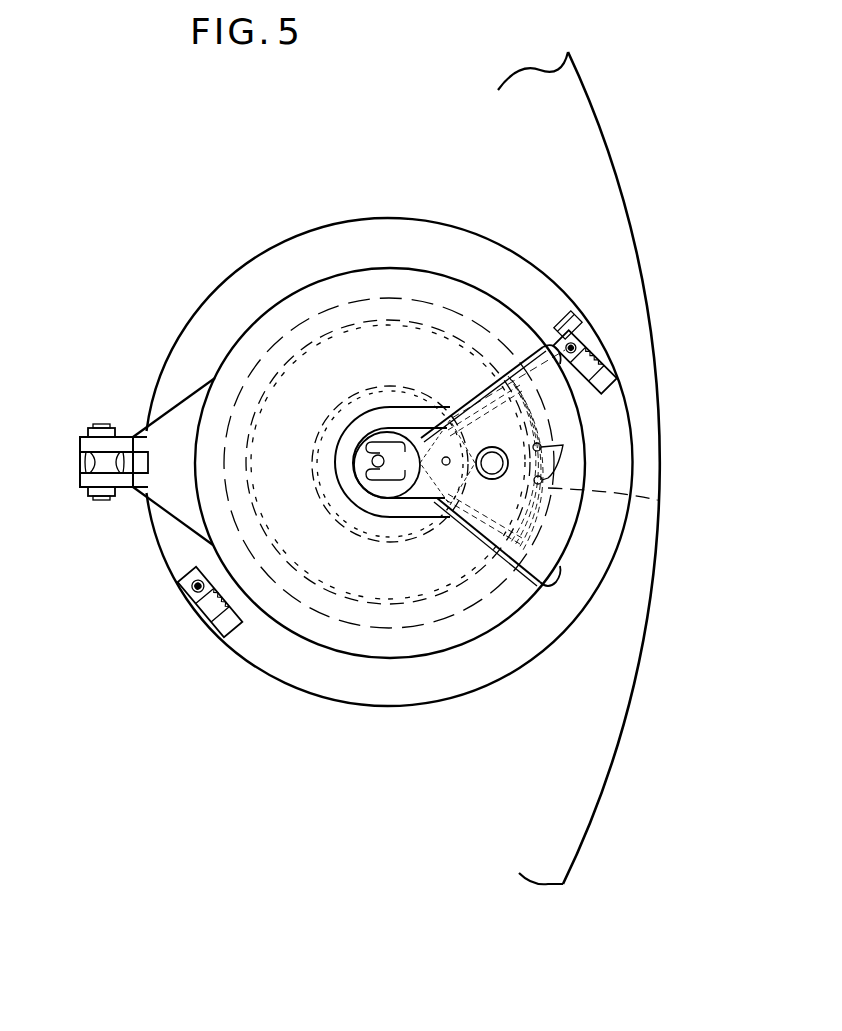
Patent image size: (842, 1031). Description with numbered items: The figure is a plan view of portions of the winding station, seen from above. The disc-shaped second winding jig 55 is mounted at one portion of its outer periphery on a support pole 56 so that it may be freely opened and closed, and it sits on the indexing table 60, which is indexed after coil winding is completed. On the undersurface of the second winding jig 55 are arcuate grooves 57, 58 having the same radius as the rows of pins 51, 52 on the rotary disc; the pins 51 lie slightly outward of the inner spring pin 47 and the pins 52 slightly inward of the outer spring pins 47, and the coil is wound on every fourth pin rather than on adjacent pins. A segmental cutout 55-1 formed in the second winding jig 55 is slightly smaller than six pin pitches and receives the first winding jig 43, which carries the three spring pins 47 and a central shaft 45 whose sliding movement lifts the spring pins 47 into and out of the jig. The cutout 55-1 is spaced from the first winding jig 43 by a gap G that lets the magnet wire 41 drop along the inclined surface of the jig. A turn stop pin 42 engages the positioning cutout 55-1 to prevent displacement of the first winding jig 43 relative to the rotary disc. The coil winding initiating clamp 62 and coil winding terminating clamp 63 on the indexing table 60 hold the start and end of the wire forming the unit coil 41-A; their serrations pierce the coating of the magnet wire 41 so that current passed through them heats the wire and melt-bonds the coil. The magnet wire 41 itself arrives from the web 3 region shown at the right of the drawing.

The film/web 3 is at (578, 98).
The magnet wire 41 is at (560, 352).
The unit coil 41-A is at (657, 500).
The turn stop pin 42 is at (387, 465).
The first winding jig 43 is at (508, 557).
The shaft 45 is at (492, 481).
The spring pins 47 is at (450, 459).
The pins 51 is at (442, 403).
The pins 52 is at (424, 320).
The second winding jig 55 is at (342, 283).
The segmental cutout 55-1 is at (505, 567).
The support pole 56 is at (86, 462).
The arcuate groove 57 is at (370, 540).
The arcuate groove 58 is at (409, 600).
The indexing table 60 is at (277, 258).
The coil winding initiating clamp 62 is at (560, 324).
The coil winding terminating clamp 63 is at (233, 627).
The gap G is at (548, 563).